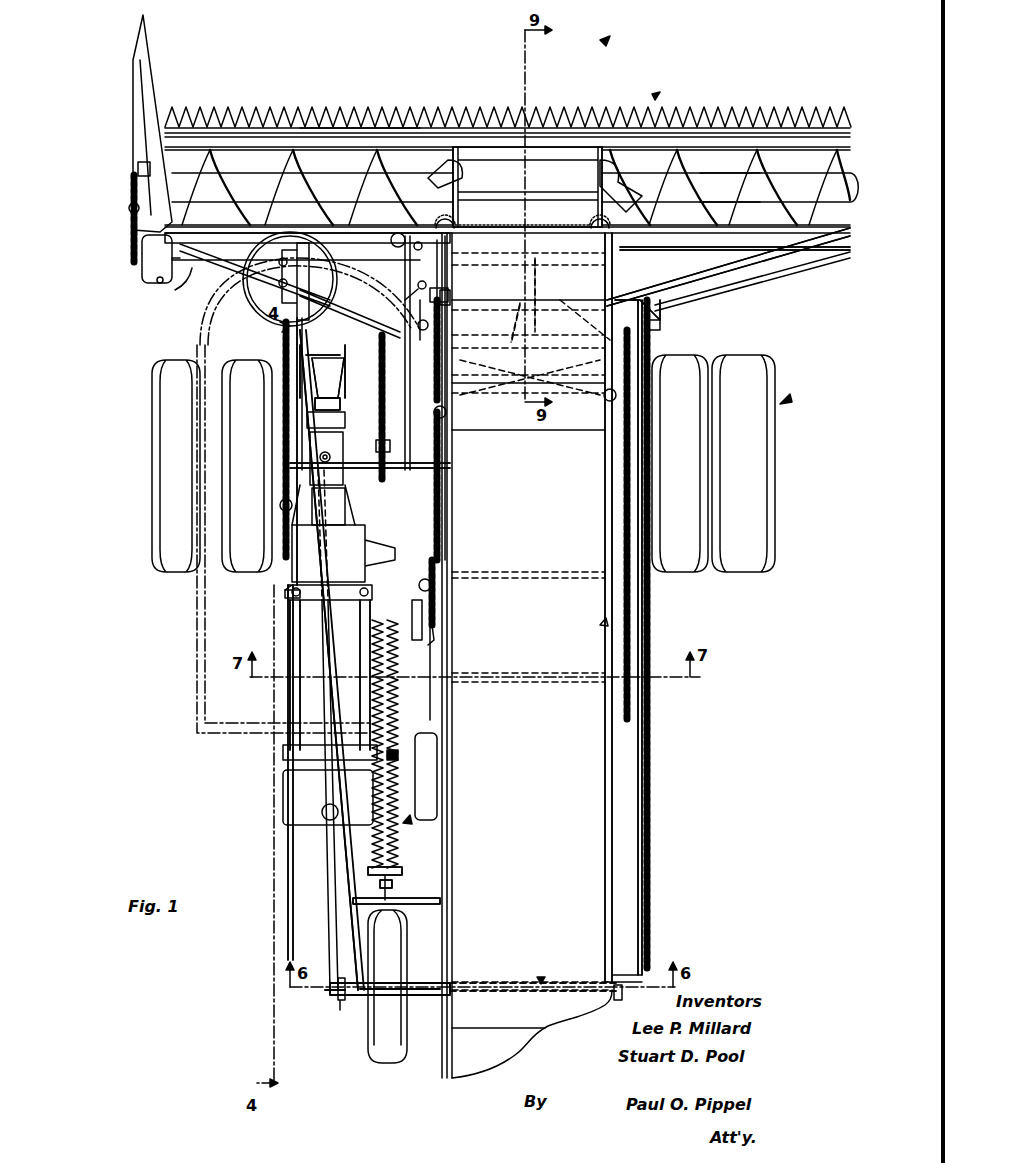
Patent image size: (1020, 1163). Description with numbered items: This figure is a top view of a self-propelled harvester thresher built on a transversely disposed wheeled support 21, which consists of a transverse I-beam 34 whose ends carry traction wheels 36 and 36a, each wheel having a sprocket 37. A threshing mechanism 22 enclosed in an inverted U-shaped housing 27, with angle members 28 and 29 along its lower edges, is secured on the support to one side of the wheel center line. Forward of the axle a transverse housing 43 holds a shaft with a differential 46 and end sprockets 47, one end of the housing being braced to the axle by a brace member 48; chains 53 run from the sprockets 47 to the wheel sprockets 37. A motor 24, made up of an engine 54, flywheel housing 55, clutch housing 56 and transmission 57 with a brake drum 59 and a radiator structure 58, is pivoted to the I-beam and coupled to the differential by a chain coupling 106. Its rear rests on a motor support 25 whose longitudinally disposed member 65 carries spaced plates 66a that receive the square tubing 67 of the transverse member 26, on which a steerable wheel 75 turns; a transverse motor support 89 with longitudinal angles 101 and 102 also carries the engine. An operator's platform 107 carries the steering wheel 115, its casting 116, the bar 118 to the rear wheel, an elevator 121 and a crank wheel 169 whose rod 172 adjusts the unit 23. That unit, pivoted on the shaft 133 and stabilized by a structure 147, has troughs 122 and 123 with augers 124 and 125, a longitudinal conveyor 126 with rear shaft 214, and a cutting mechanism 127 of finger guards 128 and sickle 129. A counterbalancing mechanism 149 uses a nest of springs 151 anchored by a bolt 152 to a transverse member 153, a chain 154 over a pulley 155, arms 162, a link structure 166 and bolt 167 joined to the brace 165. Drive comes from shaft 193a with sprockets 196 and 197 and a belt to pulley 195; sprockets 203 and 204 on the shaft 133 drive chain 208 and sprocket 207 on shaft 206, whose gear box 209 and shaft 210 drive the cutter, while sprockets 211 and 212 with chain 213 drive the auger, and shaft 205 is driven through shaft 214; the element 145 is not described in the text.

The wheeled support 21 is at (782, 403).
The threshing mechanism 22 is at (604, 623).
The unit 23 is at (618, 24).
The motor 24 is at (276, 621).
The motor support 25 is at (312, 862).
The transverse member 26 is at (541, 976).
The inverted U-shaped housing 27 is at (600, 840).
The angle member 28 is at (624, 992).
The angle member 29 is at (408, 820).
The transverse I-beam 34 is at (368, 470).
The traction wheel 36 is at (698, 450).
The traction wheel 36a is at (757, 447).
The sprocket 37 is at (281, 506).
The housing 43 is at (523, 305).
The differential 46 is at (352, 362).
The sprocket 47 is at (650, 316).
The brace member 48 is at (298, 414).
The chain 53 is at (284, 427).
The engine 54 is at (357, 645).
The flywheel housing 55 is at (356, 564).
The clutch housing 56 is at (322, 502).
The transmission 57 is at (338, 474).
The radiator structure 58 is at (307, 820).
The brake drum 59 is at (344, 421).
The longitudinally disposed member 65 is at (324, 882).
The spaced plates 66a is at (341, 1000).
The square tubing 67 is at (513, 986).
The steerable wheel 75 is at (358, 1023).
The transverse motor support 89 is at (430, 678).
The longitudinal angle 101 is at (360, 629).
The longitudinal angle 102 is at (292, 596).
The chain coupling 106 is at (341, 407).
The operator's platform 107 is at (196, 712).
The steering wheel 115 is at (236, 233).
The casting 116 is at (272, 306).
The longitudinally disposed bar 118 is at (342, 846).
The elevator 121 is at (440, 807).
The curved sheet metal trough 122 is at (720, 168).
The curved sheet metal trough 123 is at (220, 172).
The open end auger 124 is at (678, 170).
The open end auger 125 is at (272, 160).
The longitudinal conveyor 126 is at (514, 182).
The cutting mechanism 127 is at (657, 98).
The finger guards 128 is at (372, 118).
The reciprocating sickle 129 is at (380, 126).
The shaft 133 is at (446, 430).
The bearing 145 is at (597, 222).
The structure 147 is at (394, 235).
The counterbalancing mechanism 149 is at (402, 850).
The nest of springs 151 is at (404, 870).
The bolt 152 is at (394, 885).
The transverse member 153 is at (428, 898).
The chain 154 is at (383, 482).
The pulley 155 is at (378, 444).
The arm 162 is at (606, 400).
The brace 165 is at (733, 252).
The link structure 166 is at (330, 396).
The bolt 167 is at (656, 306).
The crank wheel 169 is at (416, 283).
The rod 172 is at (446, 282).
The shaft 193a is at (422, 618).
The pulley 195 is at (433, 606).
The sprocket 196 is at (430, 590).
The sprocket 197 is at (436, 634).
The sprocket 203 is at (447, 353).
The sprocket 204 is at (447, 412).
The shaft 205 is at (735, 262).
The shaft 206 is at (180, 300).
The sprocket 207 is at (414, 242).
The chain 208 is at (449, 296).
The gear box 209 is at (158, 290).
The shaft 210 is at (138, 168).
The sprocket 211 is at (150, 283).
The sprocket 212 is at (131, 186).
The chain 213 is at (129, 210).
The rear shaft 214 is at (536, 296).